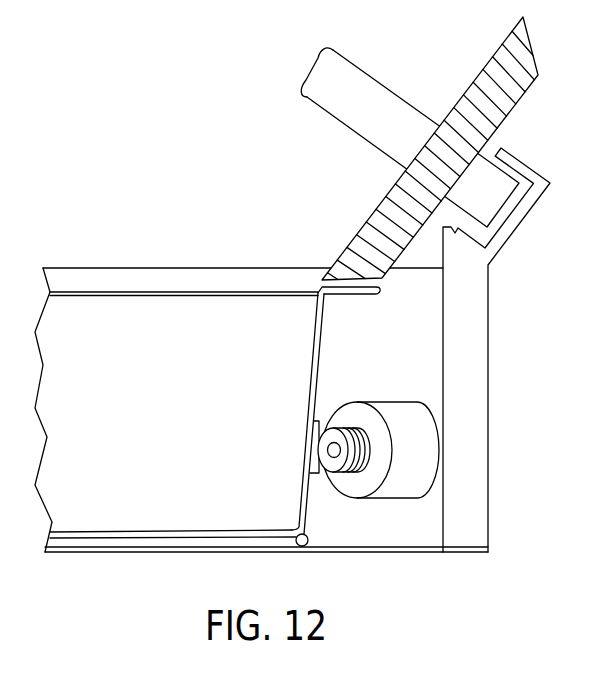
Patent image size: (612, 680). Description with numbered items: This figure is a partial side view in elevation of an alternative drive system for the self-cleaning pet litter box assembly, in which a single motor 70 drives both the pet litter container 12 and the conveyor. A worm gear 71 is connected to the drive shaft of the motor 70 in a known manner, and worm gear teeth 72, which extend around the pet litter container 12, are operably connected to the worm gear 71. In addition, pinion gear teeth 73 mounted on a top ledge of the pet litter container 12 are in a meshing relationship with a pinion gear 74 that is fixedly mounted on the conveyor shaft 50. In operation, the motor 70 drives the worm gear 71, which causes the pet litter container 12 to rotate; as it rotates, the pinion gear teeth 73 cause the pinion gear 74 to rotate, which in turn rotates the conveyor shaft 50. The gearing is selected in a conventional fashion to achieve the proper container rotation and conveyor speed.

The pet litter container 12 is at (313, 333).
The conveyor shaft 50 is at (362, 74).
The motor 70 is at (440, 452).
The worm gear 71 is at (347, 427).
The worm gear teeth 72 is at (313, 447).
The pinion gear teeth 73 is at (364, 295).
The pinion gear 74 is at (381, 210).